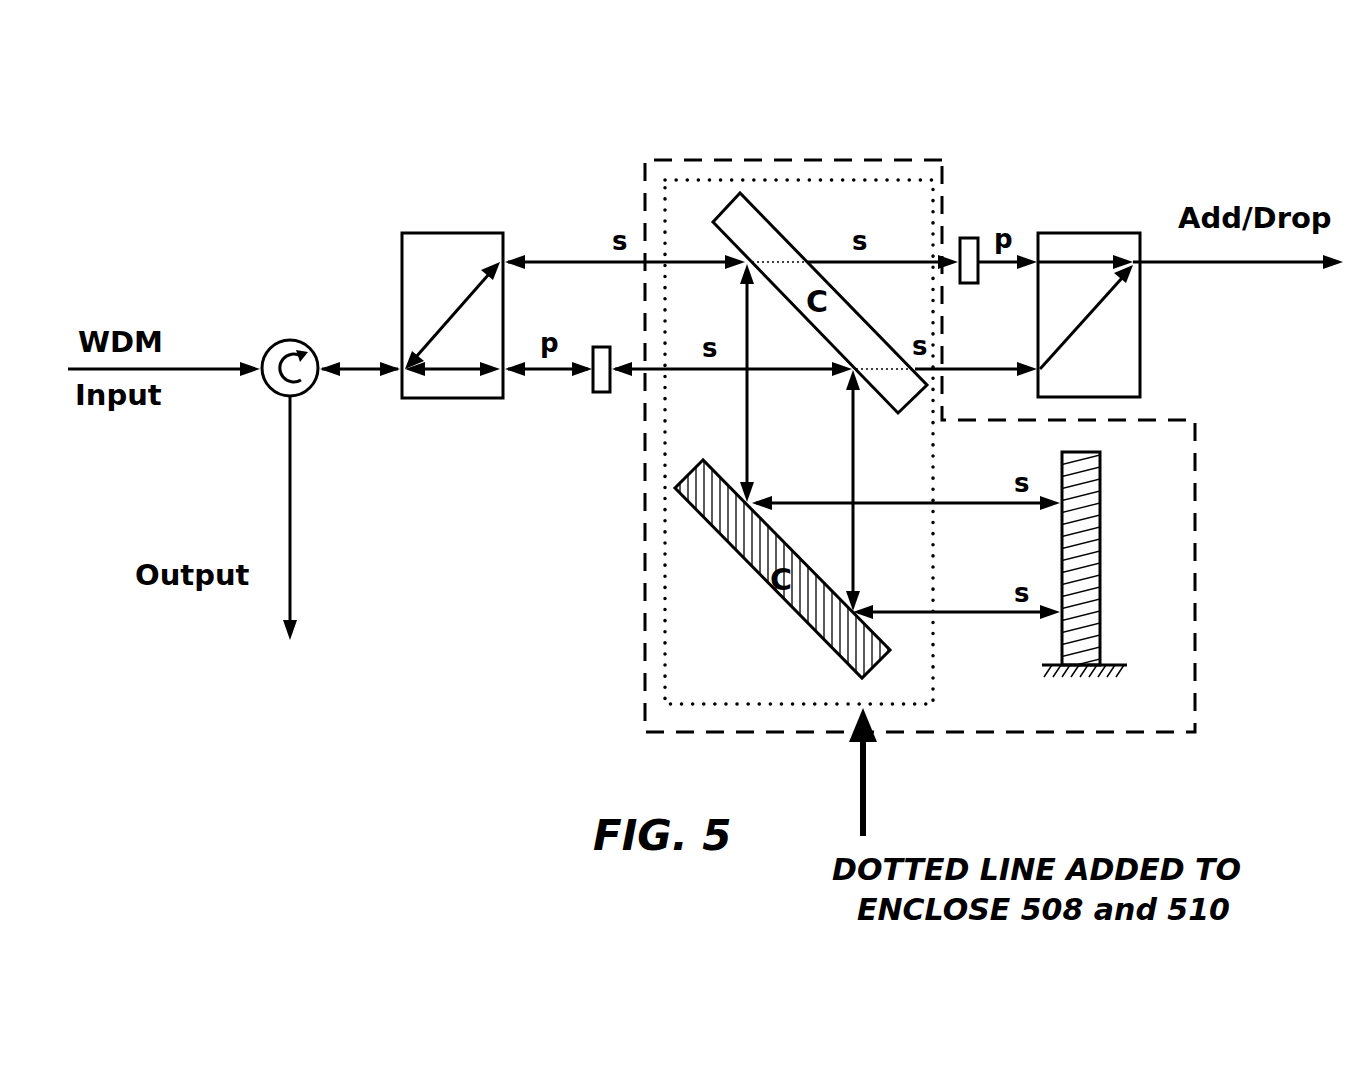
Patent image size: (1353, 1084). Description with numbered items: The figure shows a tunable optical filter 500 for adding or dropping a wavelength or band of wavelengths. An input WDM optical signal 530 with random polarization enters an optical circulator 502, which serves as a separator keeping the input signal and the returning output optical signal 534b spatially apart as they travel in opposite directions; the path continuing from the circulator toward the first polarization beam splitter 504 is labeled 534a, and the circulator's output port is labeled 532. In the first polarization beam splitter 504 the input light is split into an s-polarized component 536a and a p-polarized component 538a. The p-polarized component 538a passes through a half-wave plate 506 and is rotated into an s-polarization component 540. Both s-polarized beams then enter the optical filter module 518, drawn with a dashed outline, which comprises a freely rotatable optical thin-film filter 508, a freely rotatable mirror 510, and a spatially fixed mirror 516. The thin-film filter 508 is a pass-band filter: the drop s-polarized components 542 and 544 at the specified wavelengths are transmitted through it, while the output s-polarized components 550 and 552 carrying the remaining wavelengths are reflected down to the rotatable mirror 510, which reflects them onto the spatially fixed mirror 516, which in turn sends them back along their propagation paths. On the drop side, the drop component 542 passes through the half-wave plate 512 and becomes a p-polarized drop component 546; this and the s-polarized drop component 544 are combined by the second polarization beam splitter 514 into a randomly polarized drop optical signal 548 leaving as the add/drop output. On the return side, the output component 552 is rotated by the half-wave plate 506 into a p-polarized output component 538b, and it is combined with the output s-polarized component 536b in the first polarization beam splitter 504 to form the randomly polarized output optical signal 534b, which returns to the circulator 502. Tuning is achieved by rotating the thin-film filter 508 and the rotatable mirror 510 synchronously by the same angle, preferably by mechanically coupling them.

The tunable optical filter 500 is at (292, 140).
The optical circulator 502 is at (285, 338).
The first polarization beam splitter 504 is at (445, 233).
The half-wave plate 506 is at (600, 392).
The optical thin-film filter 508 is at (732, 212).
The rotatable mirror 510 is at (830, 645).
The half-wave plate 512 is at (968, 238).
The second polarization beam splitter 514 is at (1090, 233).
The spatially fixed mirror 516 is at (1100, 612).
The optical filter module 518 is at (645, 622).
The input optical signal 530 is at (240, 369).
The output beam 532 is at (290, 460).
The beam between circulator and displacer 534a is at (380, 366).
The output optical signal 534b is at (345, 372).
The s-polarized component 536a is at (740, 262).
The output s-polarized component 536b is at (505, 262).
The p-polarized component 538a is at (575, 375).
The p-polarized output component 538b is at (512, 370).
The s-polarization component 540 is at (840, 372).
The drop s-polarized component 542 is at (830, 262).
The drop s-polarized component 544 is at (970, 368).
The p-polarized drop component 546 is at (1000, 262).
The drop optical signal 548 is at (1160, 268).
The output s-polarized component 550 is at (747, 470).
The output s-polarized component 552 is at (855, 592).